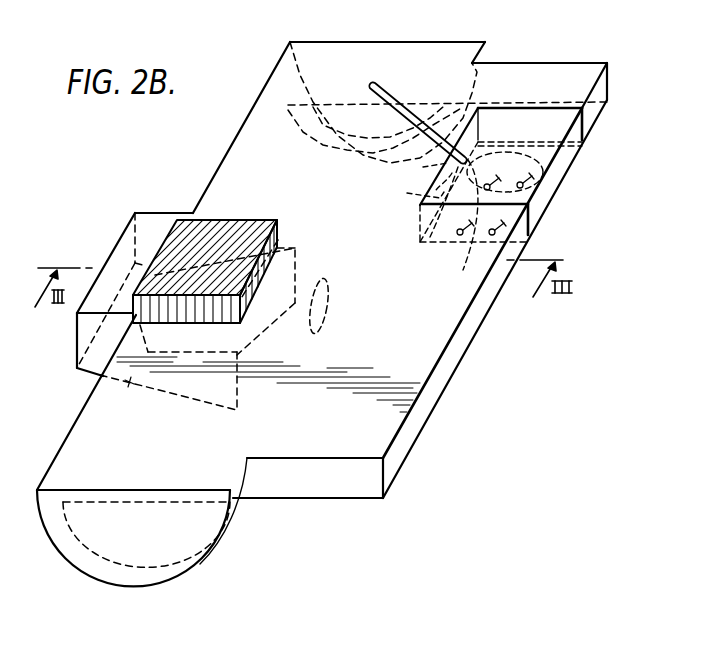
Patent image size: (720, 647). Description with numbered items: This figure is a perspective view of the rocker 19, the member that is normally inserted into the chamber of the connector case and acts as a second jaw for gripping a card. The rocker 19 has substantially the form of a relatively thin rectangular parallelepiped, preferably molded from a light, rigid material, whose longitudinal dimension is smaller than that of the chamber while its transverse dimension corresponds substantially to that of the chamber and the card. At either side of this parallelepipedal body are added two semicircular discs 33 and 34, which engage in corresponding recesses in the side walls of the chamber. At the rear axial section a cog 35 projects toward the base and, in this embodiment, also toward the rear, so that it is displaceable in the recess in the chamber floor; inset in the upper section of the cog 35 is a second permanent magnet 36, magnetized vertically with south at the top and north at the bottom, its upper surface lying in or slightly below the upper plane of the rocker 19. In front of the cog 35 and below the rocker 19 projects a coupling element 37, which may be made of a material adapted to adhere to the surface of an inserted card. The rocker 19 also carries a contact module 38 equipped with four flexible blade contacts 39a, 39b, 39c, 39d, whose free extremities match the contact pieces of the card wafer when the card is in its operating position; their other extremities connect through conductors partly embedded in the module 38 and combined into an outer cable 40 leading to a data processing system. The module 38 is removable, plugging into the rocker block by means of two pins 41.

The rocker 19 is at (542, 63).
The semicircular disc 33 is at (194, 562).
The semicircular disc 34 is at (445, 42).
The cog 35 is at (82, 373).
The second permanent magnet 36 is at (178, 220).
The coupling element 37 is at (329, 306).
The contact module 38 is at (548, 200).
The flexible contact blade 39a is at (470, 246).
The flexible contact blade 39b is at (535, 233).
The flexible contact blade 39c is at (550, 178).
The flexible contact blade 39d is at (573, 145).
The outer cable 40 is at (391, 88).
The pins 41 is at (423, 167).